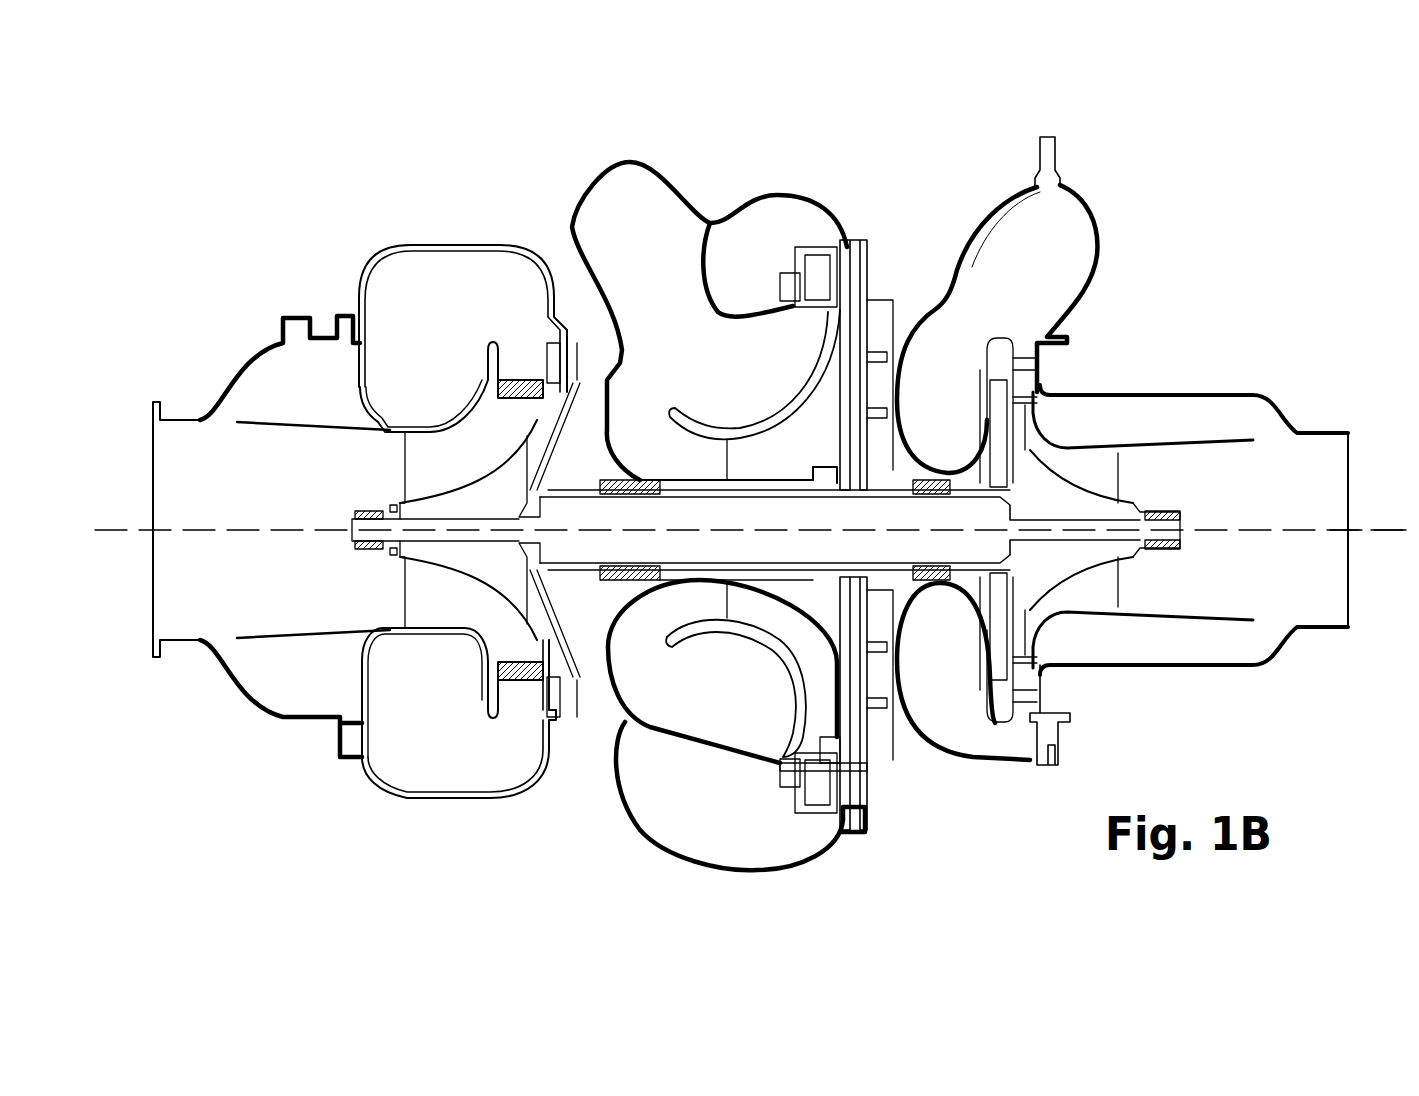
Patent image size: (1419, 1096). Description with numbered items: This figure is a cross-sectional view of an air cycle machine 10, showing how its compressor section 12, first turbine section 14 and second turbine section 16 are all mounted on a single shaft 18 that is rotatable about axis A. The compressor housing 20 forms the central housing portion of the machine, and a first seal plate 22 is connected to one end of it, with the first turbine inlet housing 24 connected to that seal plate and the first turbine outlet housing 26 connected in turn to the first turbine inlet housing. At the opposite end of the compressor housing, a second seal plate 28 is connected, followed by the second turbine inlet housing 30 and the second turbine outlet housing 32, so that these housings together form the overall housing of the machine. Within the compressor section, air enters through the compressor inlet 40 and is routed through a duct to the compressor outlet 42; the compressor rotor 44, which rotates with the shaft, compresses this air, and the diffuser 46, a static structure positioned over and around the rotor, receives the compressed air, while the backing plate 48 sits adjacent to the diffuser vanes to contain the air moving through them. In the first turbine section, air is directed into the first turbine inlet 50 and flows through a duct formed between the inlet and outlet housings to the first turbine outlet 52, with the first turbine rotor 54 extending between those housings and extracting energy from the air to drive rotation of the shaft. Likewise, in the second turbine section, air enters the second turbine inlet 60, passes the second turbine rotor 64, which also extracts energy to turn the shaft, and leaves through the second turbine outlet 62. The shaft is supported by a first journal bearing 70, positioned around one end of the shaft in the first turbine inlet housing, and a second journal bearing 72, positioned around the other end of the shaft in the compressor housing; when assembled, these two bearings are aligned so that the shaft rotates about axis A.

The air cycle machine 10 is at (185, 207).
The compressor section 12 is at (728, 150).
The first turbine section 14 is at (1185, 234).
The second turbine section 16 is at (371, 207).
The shaft 18 is at (990, 548).
The compressor housing 20 is at (787, 870).
The first seal plate 22 is at (870, 268).
The first turbine inlet housing 24 is at (1095, 229).
The first turbine outlet housing 26 is at (1212, 388).
The second seal plate 28 is at (565, 685).
The second turbine inlet housing 30 is at (400, 797).
The second turbine outlet housing 32 is at (258, 712).
The compressor inlet 40 is at (626, 207).
The compressor outlet 42 is at (717, 828).
The compressor rotor 44 is at (735, 457).
The diffuser 46 is at (813, 313).
The backing plate 48 is at (822, 285).
The first turbine inlet 50 is at (1020, 272).
The first turbine outlet 52 is at (1323, 583).
The first turbine rotor 54 is at (1100, 473).
The second turbine inlet 60 is at (460, 283).
The second turbine outlet 62 is at (180, 462).
The second turbine rotor 64 is at (433, 471).
The first journal bearing 70 is at (950, 575).
The second journal bearing 72 is at (603, 580).
The axis A is at (1368, 527).